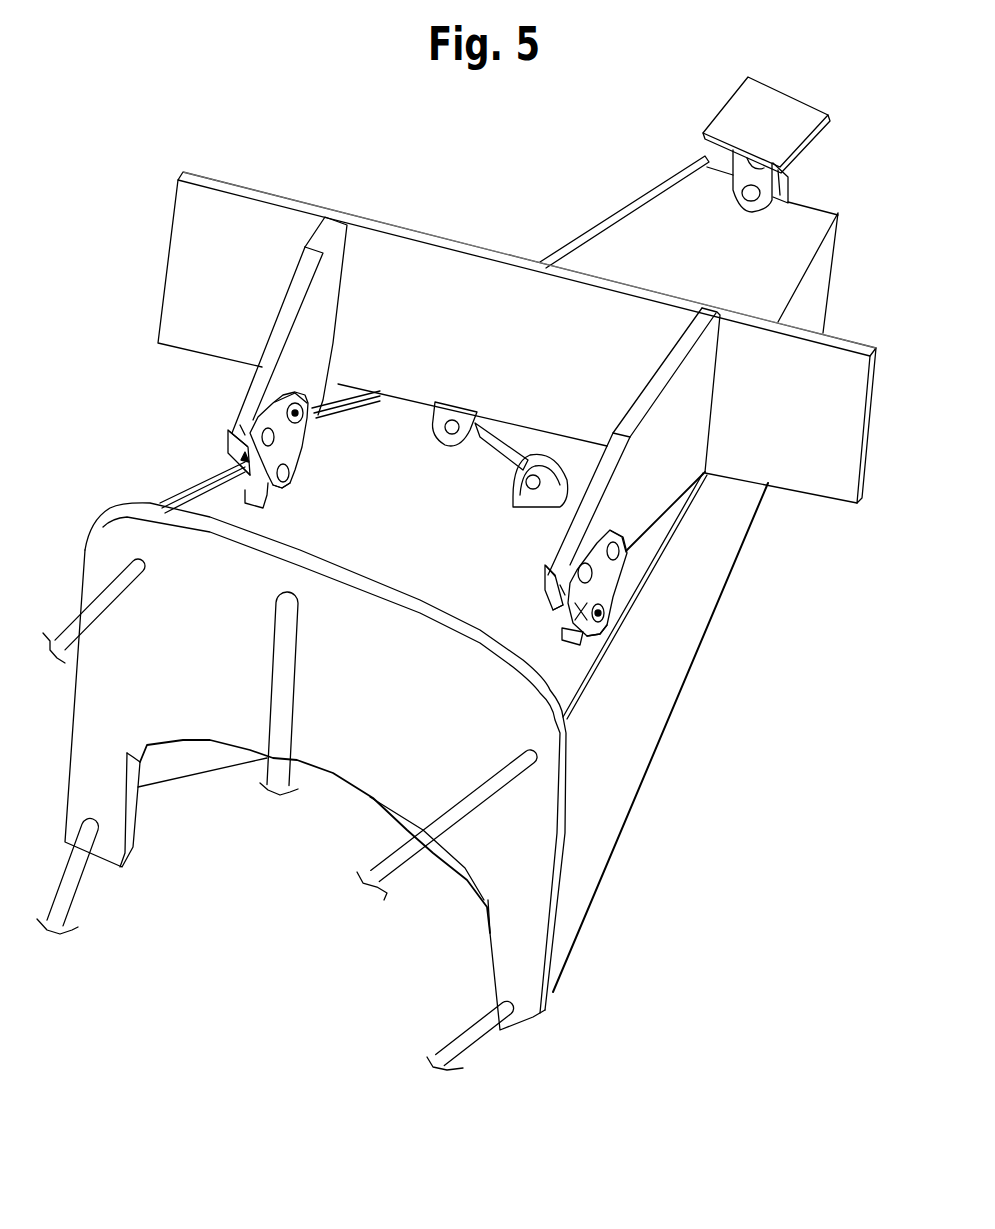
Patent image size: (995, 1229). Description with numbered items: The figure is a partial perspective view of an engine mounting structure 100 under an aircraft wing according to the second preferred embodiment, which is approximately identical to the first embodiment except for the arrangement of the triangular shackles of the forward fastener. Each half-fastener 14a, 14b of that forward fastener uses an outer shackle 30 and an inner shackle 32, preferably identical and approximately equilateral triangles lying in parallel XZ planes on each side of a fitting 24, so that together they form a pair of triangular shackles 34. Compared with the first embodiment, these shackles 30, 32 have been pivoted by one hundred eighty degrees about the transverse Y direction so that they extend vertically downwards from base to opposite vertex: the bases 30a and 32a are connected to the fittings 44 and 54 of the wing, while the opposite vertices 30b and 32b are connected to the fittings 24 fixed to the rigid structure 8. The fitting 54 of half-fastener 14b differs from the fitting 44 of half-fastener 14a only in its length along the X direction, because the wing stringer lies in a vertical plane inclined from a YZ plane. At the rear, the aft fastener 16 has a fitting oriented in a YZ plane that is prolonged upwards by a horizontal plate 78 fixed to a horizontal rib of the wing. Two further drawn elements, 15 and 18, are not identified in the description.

The mounting structure 100 is at (287, 130).
The rigid structure 8 is at (562, 1013).
The half-fastener 14a is at (648, 562).
The half-fastener 14b is at (213, 410).
The link 15 is at (483, 462).
The aft fastener 16 is at (812, 180).
The rear cross tube 18 is at (641, 256).
The fitting 24 is at (288, 413).
The outer shackle 30 is at (228, 492).
The base 30a is at (237, 420).
The vertex 30b is at (240, 477).
The inner shackle 32 is at (270, 488).
The base 32a is at (297, 405).
The vertex 32b is at (290, 480).
The pair of triangular shackles 34 is at (210, 643).
The fitting 44 is at (665, 377).
The fitting 54 is at (326, 302).
The horizontal plate 78 is at (770, 113).